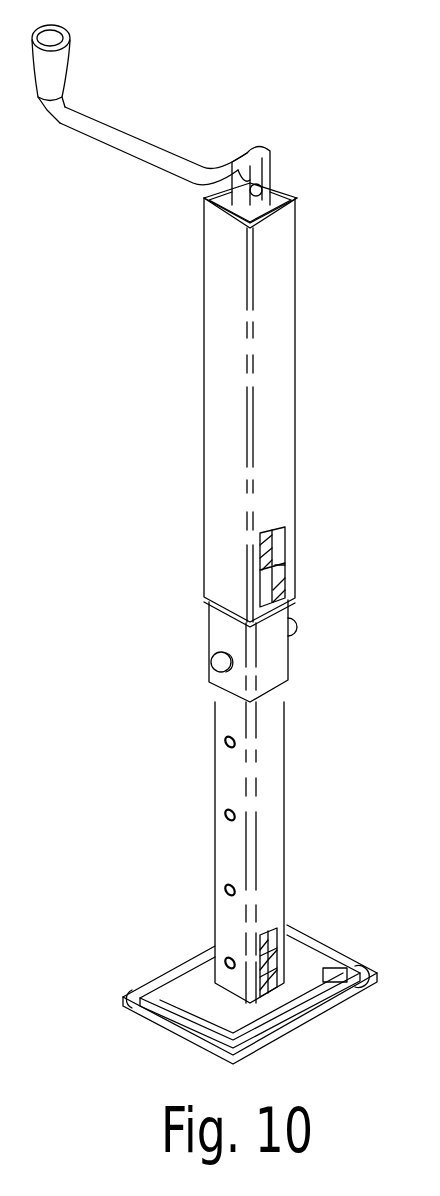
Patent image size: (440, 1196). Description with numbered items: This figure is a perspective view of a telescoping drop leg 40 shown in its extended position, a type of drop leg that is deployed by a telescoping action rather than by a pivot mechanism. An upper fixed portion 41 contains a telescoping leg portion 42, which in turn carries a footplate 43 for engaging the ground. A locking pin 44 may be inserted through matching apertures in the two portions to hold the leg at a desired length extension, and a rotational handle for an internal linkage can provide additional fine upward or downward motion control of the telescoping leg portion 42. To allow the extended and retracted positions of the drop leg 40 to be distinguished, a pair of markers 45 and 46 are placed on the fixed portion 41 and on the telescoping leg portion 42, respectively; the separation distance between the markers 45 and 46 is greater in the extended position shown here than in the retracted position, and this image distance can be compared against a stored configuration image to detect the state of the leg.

The drop leg 40 is at (183, 349).
The upper fixed portion 41 is at (283, 268).
The telescoping leg portion 42 is at (270, 782).
The footplate 43 is at (302, 978).
The locking pin 44 is at (208, 661).
The marker 45 is at (278, 545).
The marker 46 is at (283, 927).